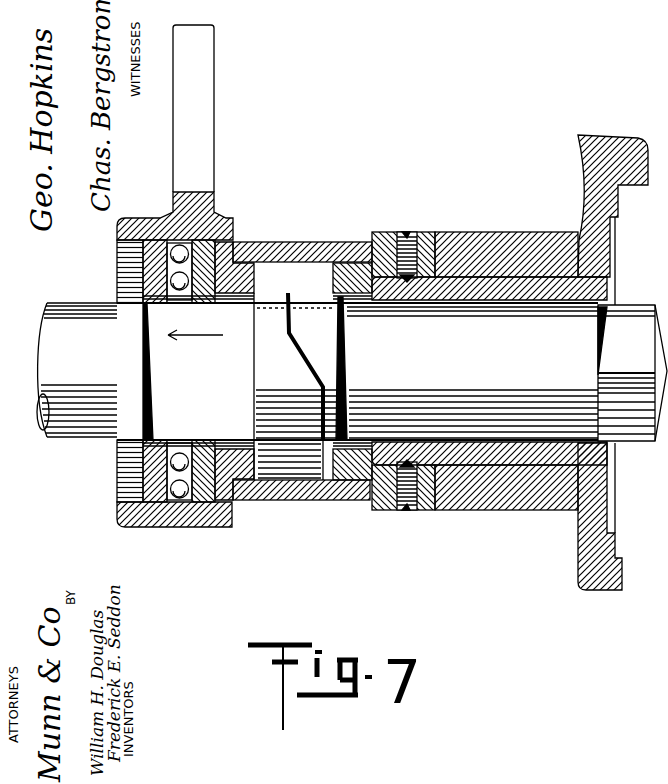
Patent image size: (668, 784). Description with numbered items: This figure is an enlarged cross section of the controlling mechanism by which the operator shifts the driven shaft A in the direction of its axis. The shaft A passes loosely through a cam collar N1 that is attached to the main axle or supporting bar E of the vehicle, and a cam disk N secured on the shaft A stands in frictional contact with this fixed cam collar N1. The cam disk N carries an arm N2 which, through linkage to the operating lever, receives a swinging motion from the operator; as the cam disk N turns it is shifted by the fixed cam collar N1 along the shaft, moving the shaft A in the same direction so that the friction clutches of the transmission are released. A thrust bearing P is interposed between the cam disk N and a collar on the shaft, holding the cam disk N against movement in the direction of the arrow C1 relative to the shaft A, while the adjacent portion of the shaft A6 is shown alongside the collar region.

The arm N2 is at (203, 88).
The main axle or supporting bar E is at (590, 150).
The thrust bearing P is at (140, 273).
The driven shaft A6 is at (132, 354).
The cam disk N is at (267, 367).
The cam collar N1 is at (335, 352).
The driven shaft A is at (392, 372).
The direction arrow C1 is at (195, 343).